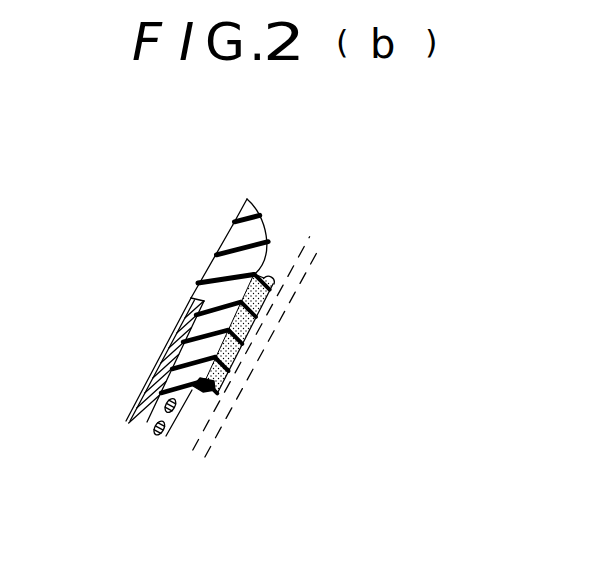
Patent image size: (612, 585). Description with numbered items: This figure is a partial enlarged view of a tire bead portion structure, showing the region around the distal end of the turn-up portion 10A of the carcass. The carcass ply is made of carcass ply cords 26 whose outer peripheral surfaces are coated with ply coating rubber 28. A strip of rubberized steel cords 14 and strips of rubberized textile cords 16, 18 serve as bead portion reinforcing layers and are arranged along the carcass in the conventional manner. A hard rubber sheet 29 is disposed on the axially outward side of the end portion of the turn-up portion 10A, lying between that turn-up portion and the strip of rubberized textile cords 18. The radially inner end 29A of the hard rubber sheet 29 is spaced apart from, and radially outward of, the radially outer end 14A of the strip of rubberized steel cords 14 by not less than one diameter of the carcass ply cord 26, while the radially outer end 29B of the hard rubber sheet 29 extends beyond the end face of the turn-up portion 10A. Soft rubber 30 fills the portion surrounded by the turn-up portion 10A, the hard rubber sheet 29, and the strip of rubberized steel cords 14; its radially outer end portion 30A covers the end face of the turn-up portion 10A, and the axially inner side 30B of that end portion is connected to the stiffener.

The turn-up portion 10A is at (129, 389).
The strip of rubberized steel cords 14 is at (169, 436).
The radially outer end 14A is at (192, 397).
The strip of rubberized textile cords 16 is at (320, 252).
The strip of rubberized textile cords 18 is at (308, 242).
The carcass ply cord 26 is at (160, 358).
The ply coating rubber 28 is at (191, 300).
The hard rubber sheet 29 is at (250, 367).
The radially inner end 29A is at (205, 393).
The radially outer end 29B is at (284, 284).
The soft rubber 30 is at (265, 215).
The radially outer end portion 30A is at (252, 198).
The axially inner side 30B is at (232, 230).